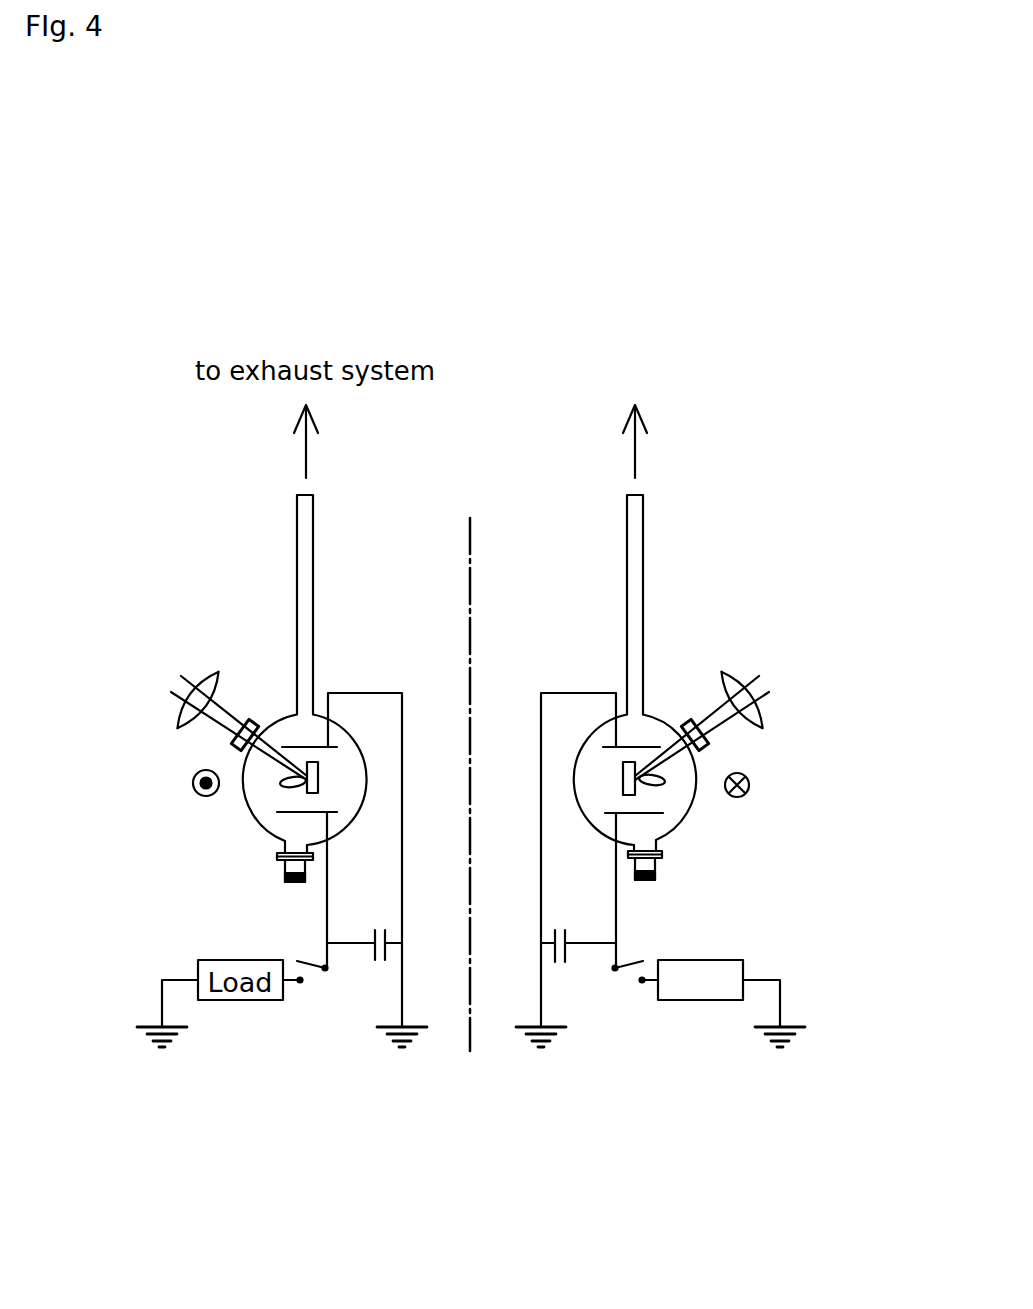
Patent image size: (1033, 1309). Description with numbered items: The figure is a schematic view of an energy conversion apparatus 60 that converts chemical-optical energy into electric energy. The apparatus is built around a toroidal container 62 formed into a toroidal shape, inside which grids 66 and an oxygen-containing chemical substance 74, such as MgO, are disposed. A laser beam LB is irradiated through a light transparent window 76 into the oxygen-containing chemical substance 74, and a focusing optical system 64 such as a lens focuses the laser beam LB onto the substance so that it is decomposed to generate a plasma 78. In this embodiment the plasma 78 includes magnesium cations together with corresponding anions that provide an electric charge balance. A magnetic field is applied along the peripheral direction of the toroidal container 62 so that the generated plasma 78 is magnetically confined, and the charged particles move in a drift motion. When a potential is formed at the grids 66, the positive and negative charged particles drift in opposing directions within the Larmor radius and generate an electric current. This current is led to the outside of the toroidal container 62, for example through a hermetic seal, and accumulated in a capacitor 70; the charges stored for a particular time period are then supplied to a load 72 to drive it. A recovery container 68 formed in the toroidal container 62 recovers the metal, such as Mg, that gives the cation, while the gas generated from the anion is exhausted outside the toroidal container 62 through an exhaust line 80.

The energy conversion apparatus 60 is at (707, 744).
The toroidal container 62 is at (686, 817).
The focusing optical system 64 is at (758, 721).
The grids 66 is at (661, 817).
The recovery container 68 is at (648, 880).
The capacitor 70 is at (564, 963).
The load 72 is at (695, 1000).
The oxygen-containing chemical substance 74 is at (626, 784).
The light transparent window 76 is at (697, 722).
The plasma 78 is at (281, 783).
The exhaust line 80 is at (307, 557).
The laser beam LB is at (722, 716).